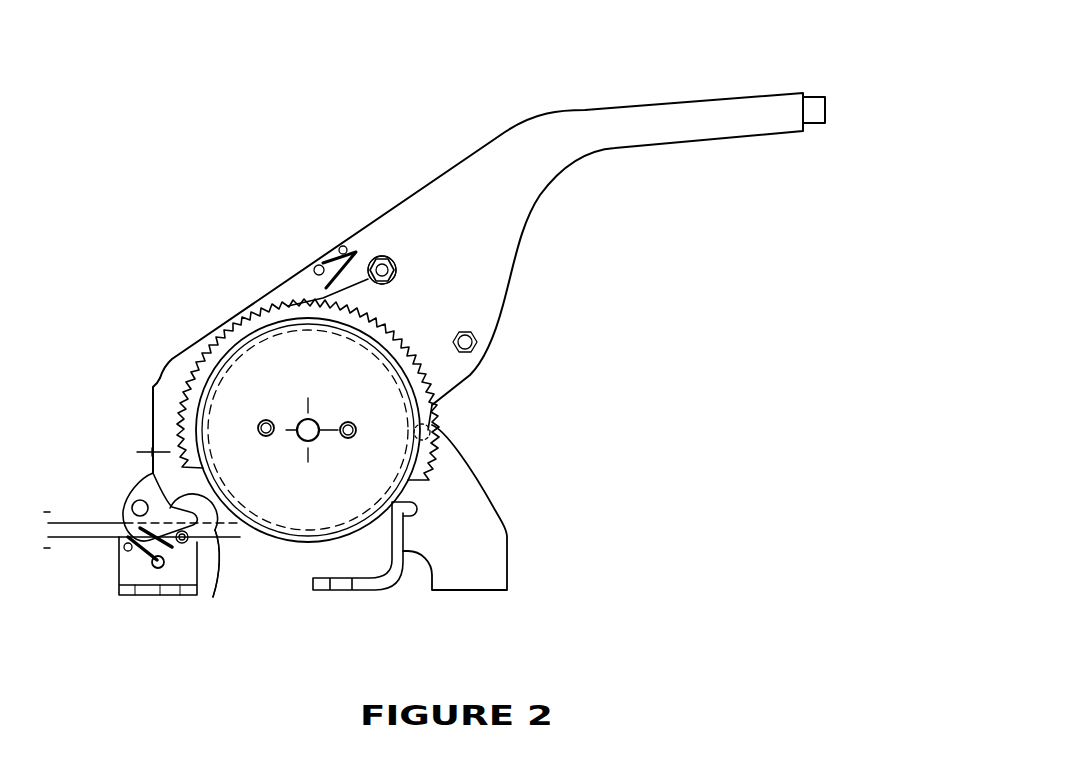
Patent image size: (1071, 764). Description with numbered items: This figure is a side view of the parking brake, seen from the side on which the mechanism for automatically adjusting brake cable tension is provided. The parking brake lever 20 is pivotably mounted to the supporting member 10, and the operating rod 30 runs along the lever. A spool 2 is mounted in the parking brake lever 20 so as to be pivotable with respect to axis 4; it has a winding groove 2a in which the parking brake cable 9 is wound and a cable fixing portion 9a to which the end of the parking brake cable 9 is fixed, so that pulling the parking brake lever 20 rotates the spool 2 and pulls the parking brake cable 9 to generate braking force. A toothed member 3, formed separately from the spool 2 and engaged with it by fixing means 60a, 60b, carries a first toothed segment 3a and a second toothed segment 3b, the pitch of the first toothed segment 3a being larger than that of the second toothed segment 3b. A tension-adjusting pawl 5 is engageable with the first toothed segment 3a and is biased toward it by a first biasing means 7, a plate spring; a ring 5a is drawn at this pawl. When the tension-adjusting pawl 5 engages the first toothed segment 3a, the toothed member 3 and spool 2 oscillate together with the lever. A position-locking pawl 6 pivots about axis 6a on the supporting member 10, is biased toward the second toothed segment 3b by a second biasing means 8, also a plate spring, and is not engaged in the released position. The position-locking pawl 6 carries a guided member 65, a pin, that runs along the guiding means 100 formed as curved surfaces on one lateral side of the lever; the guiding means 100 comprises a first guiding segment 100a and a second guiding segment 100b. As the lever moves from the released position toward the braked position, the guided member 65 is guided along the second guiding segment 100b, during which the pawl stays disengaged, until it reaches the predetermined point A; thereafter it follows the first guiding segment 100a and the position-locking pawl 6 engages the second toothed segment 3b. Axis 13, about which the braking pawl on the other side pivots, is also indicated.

The spool 2 is at (299, 510).
The winding groove 2a is at (289, 330).
The toothed member 3 is at (402, 322).
The first toothed segment 3a is at (445, 372).
The second toothed segment 3b is at (213, 330).
The axis 4 is at (312, 415).
The tension-adjusting pawl 5 is at (345, 247).
The nut ring 5a is at (390, 257).
The position-locking pawl 6 is at (122, 506).
The axis 6a is at (140, 503).
The first biasing means 7 is at (325, 262).
The second biasing means 8 is at (122, 567).
The parking brake cable 9 is at (68, 540).
The cable fixing portion 9a is at (432, 432).
The supporting member 10 is at (508, 530).
The axis 13 is at (478, 342).
The parking brake lever 20 is at (580, 108).
The operating rod 30 is at (826, 110).
The fixing means 60a is at (268, 420).
The fixing means 60b is at (348, 438).
The guided member 65 is at (190, 555).
The guiding means 100 is at (147, 480).
The first guiding segment 100a is at (150, 410).
The second guiding segment 100b is at (213, 550).
The predetermined point A is at (150, 439).